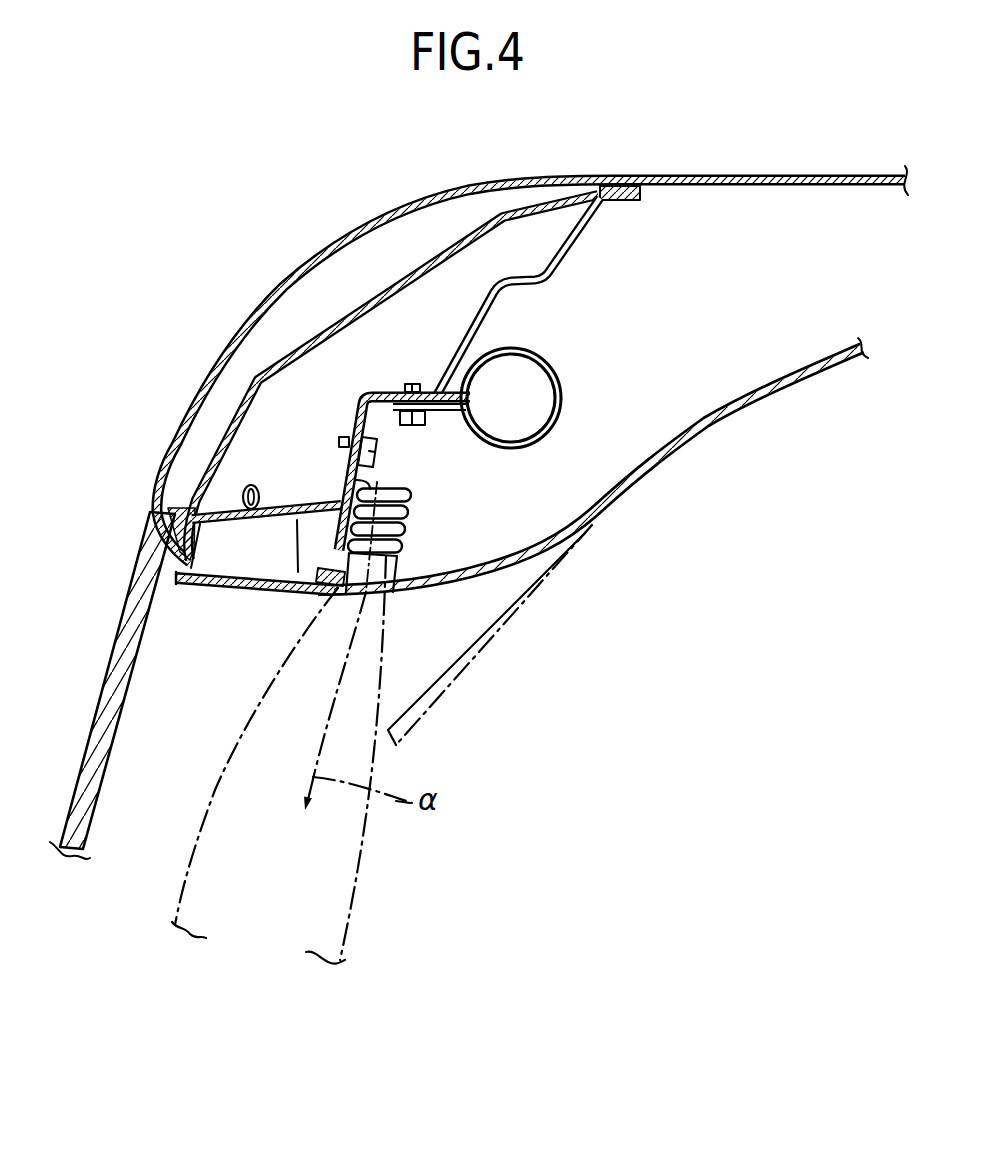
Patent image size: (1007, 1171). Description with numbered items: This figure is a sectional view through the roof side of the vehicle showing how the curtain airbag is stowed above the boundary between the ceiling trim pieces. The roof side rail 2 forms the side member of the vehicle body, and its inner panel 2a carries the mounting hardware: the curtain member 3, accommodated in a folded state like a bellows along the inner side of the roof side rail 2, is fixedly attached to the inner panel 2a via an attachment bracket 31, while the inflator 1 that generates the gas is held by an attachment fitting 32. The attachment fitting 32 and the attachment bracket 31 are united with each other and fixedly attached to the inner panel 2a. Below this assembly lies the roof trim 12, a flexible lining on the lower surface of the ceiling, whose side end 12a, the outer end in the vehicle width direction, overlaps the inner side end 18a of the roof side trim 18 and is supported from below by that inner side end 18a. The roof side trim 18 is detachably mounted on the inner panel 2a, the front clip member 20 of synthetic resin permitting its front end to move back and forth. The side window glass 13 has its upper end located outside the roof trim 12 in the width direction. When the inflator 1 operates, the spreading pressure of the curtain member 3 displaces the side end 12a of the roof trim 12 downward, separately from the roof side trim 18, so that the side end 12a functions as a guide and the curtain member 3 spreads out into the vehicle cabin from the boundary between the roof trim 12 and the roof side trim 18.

The inflator 1 is at (537, 397).
The roof side rail 2 is at (234, 308).
The inner panel 2a is at (490, 318).
The curtain member 3 is at (408, 530).
The roof trim 12 is at (703, 449).
The side end 12a is at (378, 593).
The side window glass 13 is at (90, 728).
The roof side trim 18 is at (188, 592).
The inner side end 18a is at (325, 596).
The front clip member 20 is at (257, 486).
The attachment bracket 31 is at (360, 401).
The attachment fitting 32 is at (440, 424).